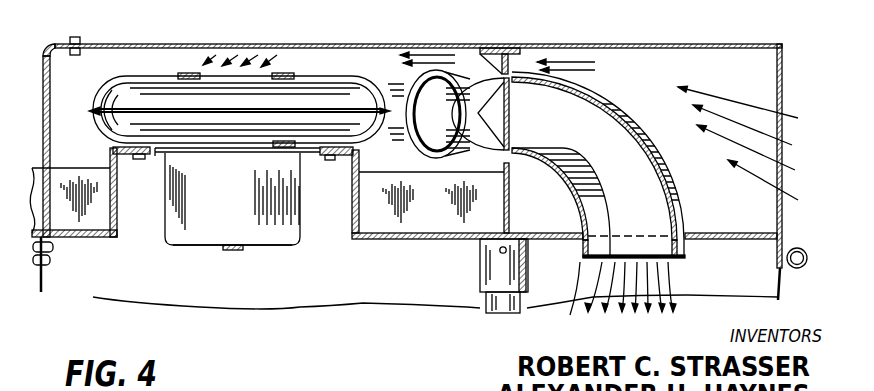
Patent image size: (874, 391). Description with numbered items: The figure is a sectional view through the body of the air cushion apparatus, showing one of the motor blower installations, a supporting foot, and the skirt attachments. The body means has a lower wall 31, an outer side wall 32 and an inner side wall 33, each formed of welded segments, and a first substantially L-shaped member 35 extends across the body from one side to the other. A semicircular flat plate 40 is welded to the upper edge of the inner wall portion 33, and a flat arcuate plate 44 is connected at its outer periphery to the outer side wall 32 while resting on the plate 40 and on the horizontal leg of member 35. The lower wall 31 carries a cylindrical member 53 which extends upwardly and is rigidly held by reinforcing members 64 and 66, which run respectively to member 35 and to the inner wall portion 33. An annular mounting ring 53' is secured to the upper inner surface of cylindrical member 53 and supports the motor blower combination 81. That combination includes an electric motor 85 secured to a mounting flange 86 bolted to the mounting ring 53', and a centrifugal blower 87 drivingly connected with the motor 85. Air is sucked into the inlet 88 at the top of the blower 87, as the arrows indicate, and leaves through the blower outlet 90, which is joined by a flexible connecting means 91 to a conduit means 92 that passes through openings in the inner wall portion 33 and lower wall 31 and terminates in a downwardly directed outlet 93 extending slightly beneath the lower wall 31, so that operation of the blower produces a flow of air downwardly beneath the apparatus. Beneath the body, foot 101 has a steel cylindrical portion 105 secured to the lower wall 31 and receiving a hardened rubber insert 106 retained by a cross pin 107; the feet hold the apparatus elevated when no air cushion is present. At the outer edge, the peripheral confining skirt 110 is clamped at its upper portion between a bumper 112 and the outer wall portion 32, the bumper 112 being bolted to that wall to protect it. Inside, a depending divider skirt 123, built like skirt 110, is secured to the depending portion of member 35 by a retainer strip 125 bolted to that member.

The lower wall 31 is at (398, 240).
The outer side wall 32 is at (782, 78).
The inner side wall 33 is at (502, 72).
The first substantially L-shaped member 35 is at (50, 80).
The first substantially semicircular flat plate 40 is at (503, 48).
The flat arcuate plate 44 is at (617, 45).
The cylindrical member 53 is at (90, 203).
The annular mounting ring 53' is at (135, 178).
The reinforcing member 64 is at (82, 183).
The reinforcing member 66 is at (405, 193).
The motor blower combination 81 is at (283, 246).
The electric motor 85 is at (193, 236).
The mounting flange 86 is at (312, 155).
The blower 87 is at (303, 100).
The inlet 88 is at (183, 73).
The outlet 90 is at (413, 90).
The flexible connecting means 91 is at (478, 137).
The conduit means 92 is at (572, 180).
The outlet 93 is at (585, 260).
The foot 101 is at (467, 313).
The downwardly extending cylindrical portion 105 is at (526, 272).
The hardened rubber insert 106 is at (520, 308).
The cross pin 107 is at (499, 252).
The skirt 110 is at (782, 290).
The bumper 112 is at (792, 248).
The divider skirt 123 is at (42, 283).
The retainer strip 125 is at (43, 268).